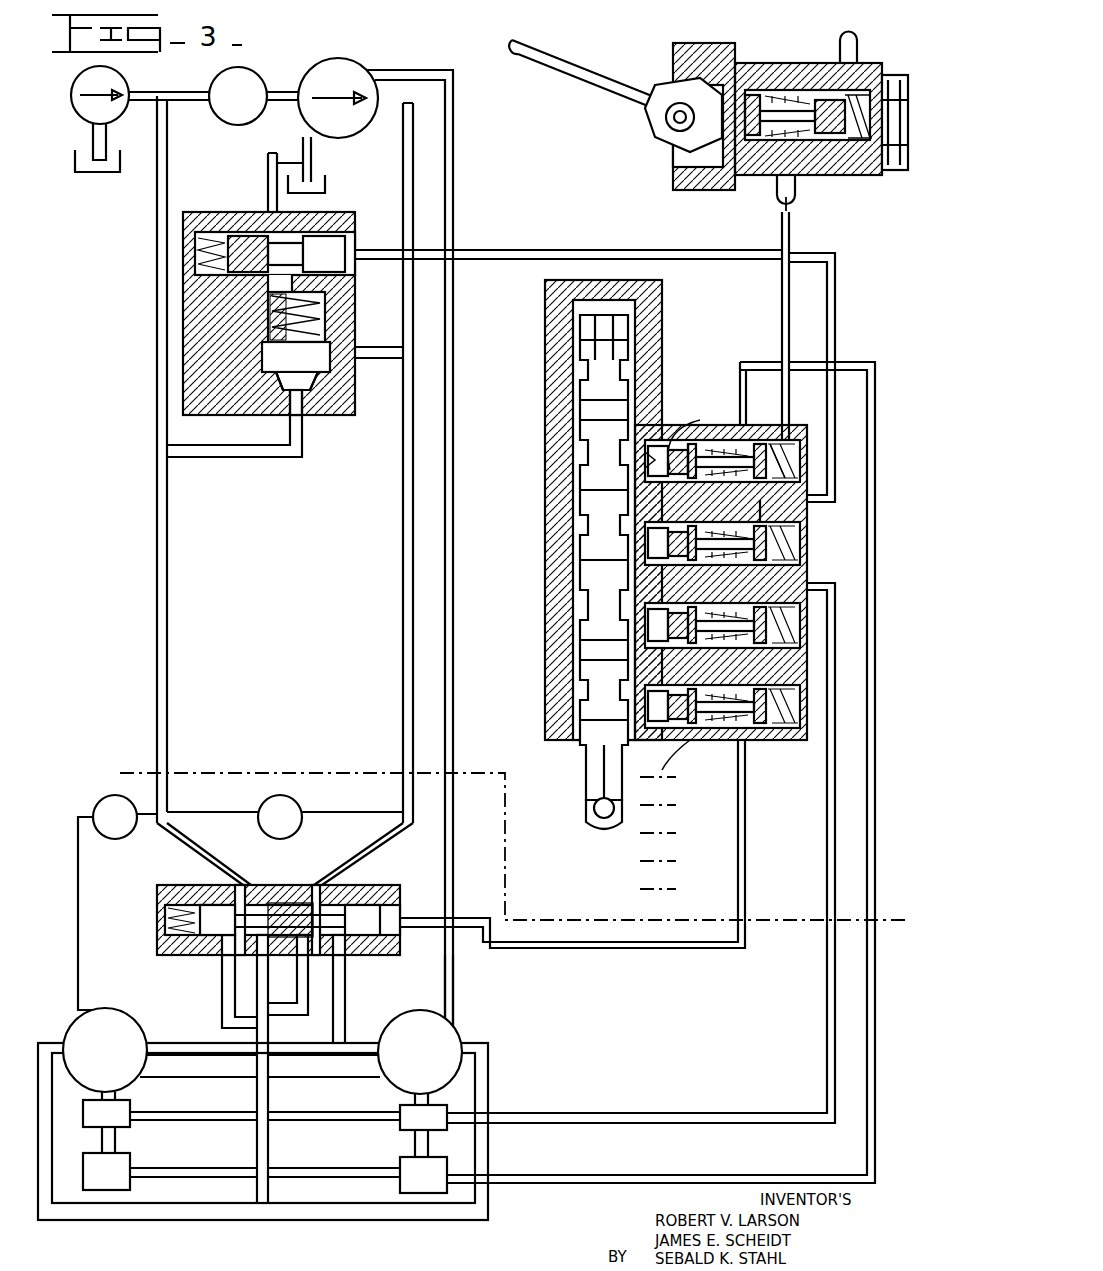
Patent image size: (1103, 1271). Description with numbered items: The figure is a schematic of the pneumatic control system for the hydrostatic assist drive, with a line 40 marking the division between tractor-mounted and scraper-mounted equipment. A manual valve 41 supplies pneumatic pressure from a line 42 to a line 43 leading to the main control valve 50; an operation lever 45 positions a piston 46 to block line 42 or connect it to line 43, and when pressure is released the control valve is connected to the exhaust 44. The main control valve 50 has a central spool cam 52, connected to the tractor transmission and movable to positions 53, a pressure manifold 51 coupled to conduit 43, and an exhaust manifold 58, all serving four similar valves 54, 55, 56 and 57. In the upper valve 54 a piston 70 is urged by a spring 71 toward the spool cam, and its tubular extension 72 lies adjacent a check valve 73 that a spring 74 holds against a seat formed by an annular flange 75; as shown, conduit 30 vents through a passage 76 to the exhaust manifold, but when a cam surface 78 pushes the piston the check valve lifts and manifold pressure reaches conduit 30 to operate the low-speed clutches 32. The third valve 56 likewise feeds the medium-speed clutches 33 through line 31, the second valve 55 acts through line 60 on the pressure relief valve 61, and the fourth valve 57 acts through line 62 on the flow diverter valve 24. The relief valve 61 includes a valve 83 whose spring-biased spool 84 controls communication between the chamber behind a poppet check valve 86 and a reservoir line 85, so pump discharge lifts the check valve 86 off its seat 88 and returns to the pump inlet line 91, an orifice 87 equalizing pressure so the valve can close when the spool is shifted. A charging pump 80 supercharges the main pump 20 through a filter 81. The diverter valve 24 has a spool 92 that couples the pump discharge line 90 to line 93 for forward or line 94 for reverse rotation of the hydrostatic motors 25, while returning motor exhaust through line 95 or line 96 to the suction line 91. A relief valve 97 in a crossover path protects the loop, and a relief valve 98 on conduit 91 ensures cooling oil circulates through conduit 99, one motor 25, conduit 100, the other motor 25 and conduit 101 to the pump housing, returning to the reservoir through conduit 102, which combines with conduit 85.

The main pump 20 is at (356, 65).
The flow diverter valve 24 is at (288, 902).
The hydrostatic motors 25 is at (100, 1010).
The low-speed clutch conduit 30 is at (663, 1172).
The medium-speed clutch conduit 31 is at (650, 1112).
The low-speed clutch 32 is at (132, 1158).
The medium-speed clutch 33 is at (132, 1105).
The division line 40 is at (112, 770).
The manual valve 41 is at (708, 227).
The pneumatic supply line 42 is at (860, 50).
The control line 43 is at (800, 200).
The exhaust 44 is at (722, 185).
The operation lever 45 is at (585, 90).
The piston 46 is at (825, 80).
The main control valve 50 is at (699, 586).
The pressure manifold 51 is at (805, 578).
The spool cam 52 is at (582, 810).
The spool cam positions 53 is at (590, 858).
The upper valve 54 is at (822, 465).
The second valve 55 is at (822, 540).
The third valve 56 is at (822, 630).
The fourth valve 57 is at (786, 738).
The exhaust manifold 58 is at (680, 566).
The relief valve line 60 is at (545, 248).
The pressure relief valve 61 is at (335, 470).
The diverter valve line 62 is at (748, 830).
The piston 70 is at (650, 468).
The spring 71 is at (700, 480).
The tubular extension 72 is at (732, 425).
The check valve 73 is at (770, 415).
The spring 74 is at (796, 440).
The annular flange 75 is at (795, 505).
The passage 76 is at (785, 462).
The cam surface 78 is at (575, 575).
The charging pump 80 is at (90, 110).
The filter 81 is at (246, 72).
The valve 83 is at (287, 296).
The spring-biased spool 84 is at (250, 228).
The reservoir line 85 is at (262, 160).
The poppet check valve 86 is at (330, 346).
The orifice 87 is at (326, 312).
The valve seat 88 is at (322, 368).
The pump discharge line 90 is at (402, 540).
The pump inlet line 91 is at (165, 425).
The spool 92 is at (292, 900).
The forward rotation line 93 is at (340, 1000).
The reverse rotation line 94 is at (308, 972).
The motor return line 95 is at (260, 970).
The motor return line 96 is at (222, 1012).
The pressure relief valve 97 is at (268, 805).
The relief valve 98 is at (100, 805).
The cooling oil conduit 99 is at (80, 880).
The cooling oil conduit 100 is at (352, 1080).
The cooling oil conduit 101 is at (450, 960).
The return conduit 102 is at (312, 142).